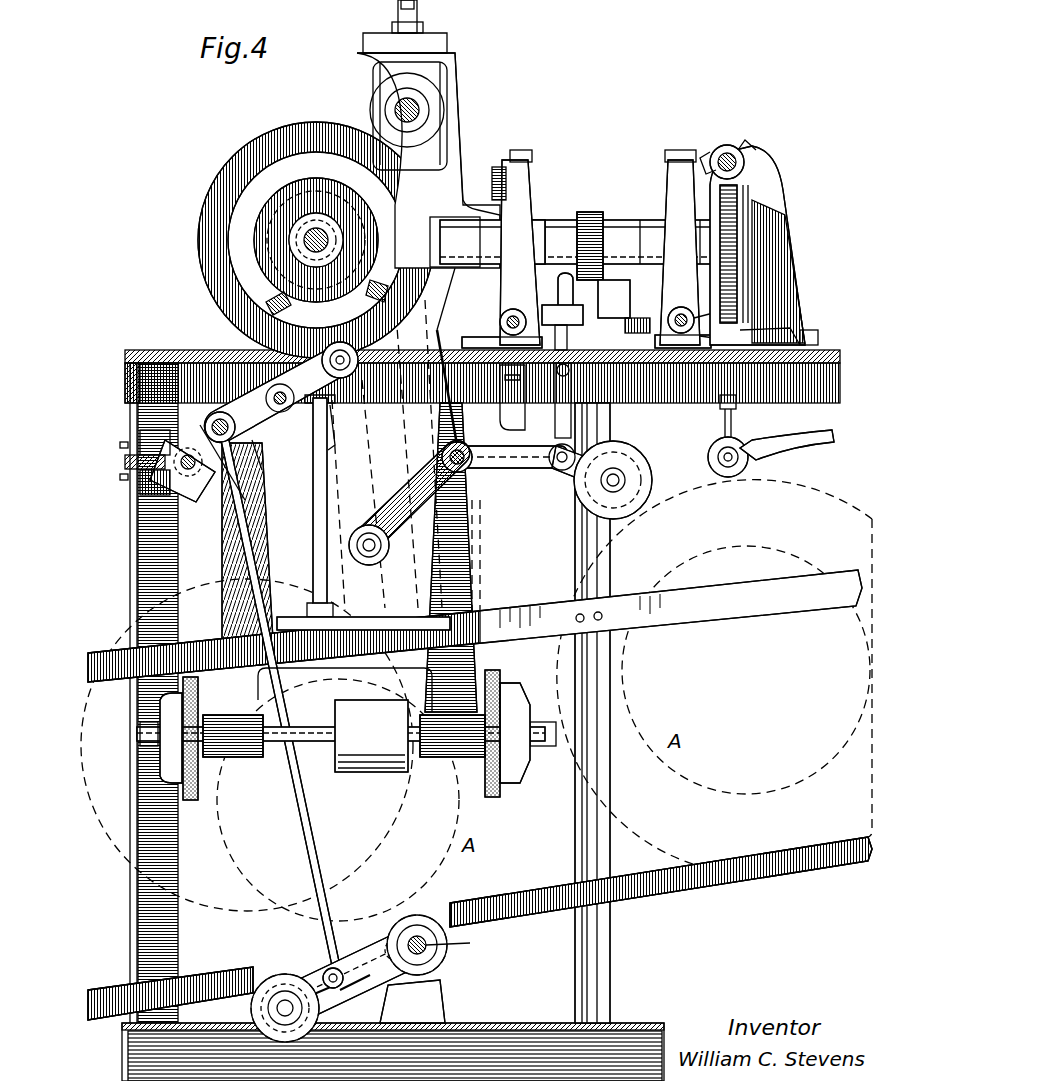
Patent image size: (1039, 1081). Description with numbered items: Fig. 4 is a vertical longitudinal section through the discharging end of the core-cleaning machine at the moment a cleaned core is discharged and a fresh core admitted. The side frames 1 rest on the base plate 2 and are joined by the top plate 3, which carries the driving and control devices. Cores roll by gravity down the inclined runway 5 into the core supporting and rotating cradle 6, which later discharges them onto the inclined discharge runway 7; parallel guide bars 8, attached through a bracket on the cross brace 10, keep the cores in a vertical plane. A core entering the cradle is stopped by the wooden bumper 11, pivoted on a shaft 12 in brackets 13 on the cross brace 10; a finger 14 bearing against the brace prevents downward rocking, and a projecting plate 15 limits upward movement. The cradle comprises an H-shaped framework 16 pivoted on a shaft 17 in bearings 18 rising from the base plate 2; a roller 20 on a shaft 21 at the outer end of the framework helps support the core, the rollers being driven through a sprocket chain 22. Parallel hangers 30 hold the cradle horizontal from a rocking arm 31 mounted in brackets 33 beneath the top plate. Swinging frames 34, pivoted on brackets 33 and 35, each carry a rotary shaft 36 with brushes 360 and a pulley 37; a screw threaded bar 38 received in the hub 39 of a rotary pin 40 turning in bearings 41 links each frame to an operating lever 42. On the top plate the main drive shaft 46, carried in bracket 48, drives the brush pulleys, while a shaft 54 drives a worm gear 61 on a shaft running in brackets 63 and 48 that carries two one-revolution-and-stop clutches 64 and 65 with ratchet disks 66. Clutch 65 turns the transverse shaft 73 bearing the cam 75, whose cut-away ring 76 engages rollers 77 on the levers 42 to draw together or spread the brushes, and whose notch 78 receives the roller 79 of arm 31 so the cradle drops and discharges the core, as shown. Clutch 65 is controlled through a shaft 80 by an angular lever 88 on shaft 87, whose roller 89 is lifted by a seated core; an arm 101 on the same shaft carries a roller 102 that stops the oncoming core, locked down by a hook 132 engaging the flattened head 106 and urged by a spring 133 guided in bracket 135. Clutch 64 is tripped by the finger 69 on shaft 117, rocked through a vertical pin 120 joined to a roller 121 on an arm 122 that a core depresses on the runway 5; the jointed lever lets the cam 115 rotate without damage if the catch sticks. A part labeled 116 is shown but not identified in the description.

The side frames 1 is at (131, 398).
The base plate 2 is at (640, 1024).
The top plate 3 is at (168, 352).
The inclined runway 5 is at (735, 880).
The core supporting and rotating cradle 6 is at (440, 984).
The inclined discharge runway 7 is at (110, 988).
The guide bars 8 is at (745, 612).
The cross brace 10 is at (124, 461).
The bumper 11 is at (200, 505).
The shaft 12 is at (266, 514).
The brackets 13 is at (140, 438).
The finger 14 is at (160, 475).
The projecting plate 15 is at (206, 420).
The H-shaped framework 16 is at (370, 935).
The shaft 17 is at (436, 948).
The bearings 18 is at (448, 1008).
The roller 20 is at (262, 988).
The shaft 21 is at (300, 982).
The sprocket chain 22 is at (470, 943).
The hangers 30 is at (302, 806).
The rocking arm 31 is at (268, 462).
The brackets 33 is at (310, 450).
The swinging arms 34 is at (225, 562).
The brackets 35 is at (535, 400).
The rotary shaft 36 is at (326, 742).
The pulley 37 is at (398, 765).
The screw threaded bar 38 is at (281, 687).
The hub 39 is at (350, 687).
The rotary pin 40 is at (360, 672).
The bearings 41 is at (296, 600).
The operating lever 42 is at (324, 498).
The main drive shaft 46 is at (420, 106).
The bracket 48 is at (455, 78).
The shaft 54 is at (727, 145).
The worm gear 61 is at (748, 218).
The bracket 63 is at (796, 252).
The one-revolution-and-stop clutch 64 is at (685, 154).
The one-revolution-and-stop clutch 65 is at (524, 164).
The ratchet disks 66 is at (539, 257).
The finger 69 is at (690, 306).
The transverse shaft 73 is at (316, 228).
The cam 75 is at (312, 126).
The raised flange or ring 76 is at (234, 231).
The rollers 77 is at (268, 304).
The notch 78 is at (405, 396).
The roller 79 is at (345, 395).
The shaft 80 is at (500, 316).
The shaft 87 is at (472, 468).
The angular lever 88 is at (428, 482).
The roller 89 is at (364, 524).
The arm 101 is at (550, 488).
The roller 102 is at (650, 462).
The flattened head 106 is at (586, 300).
The cam 115 is at (588, 212).
The shaft 116 is at (582, 235).
The shaft 117 is at (708, 316).
The vertical pin 120 is at (733, 420).
The roller 121 is at (708, 466).
The arm 122 is at (790, 442).
The hook 132 is at (632, 304).
The spring 133 is at (796, 320).
The bracket 135 is at (818, 334).
The brushes 360 is at (192, 798).